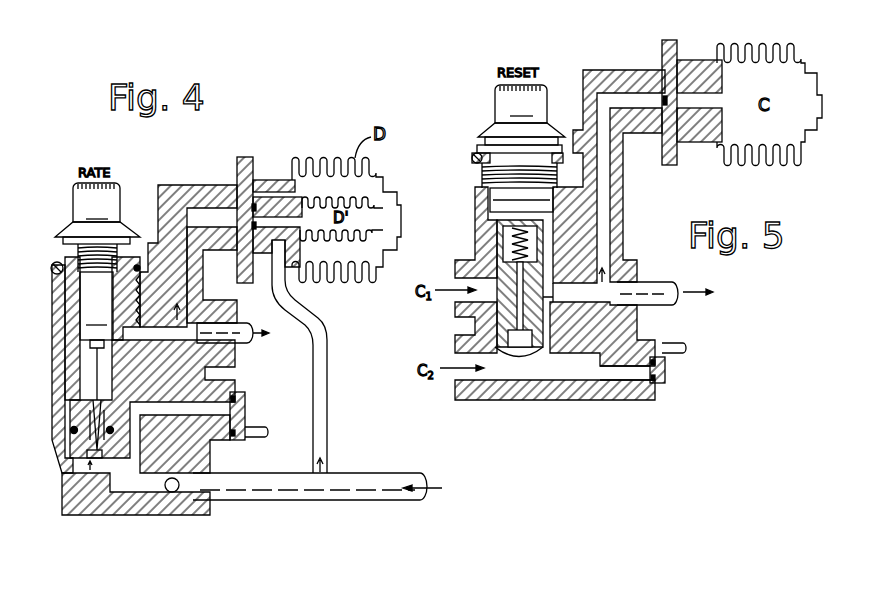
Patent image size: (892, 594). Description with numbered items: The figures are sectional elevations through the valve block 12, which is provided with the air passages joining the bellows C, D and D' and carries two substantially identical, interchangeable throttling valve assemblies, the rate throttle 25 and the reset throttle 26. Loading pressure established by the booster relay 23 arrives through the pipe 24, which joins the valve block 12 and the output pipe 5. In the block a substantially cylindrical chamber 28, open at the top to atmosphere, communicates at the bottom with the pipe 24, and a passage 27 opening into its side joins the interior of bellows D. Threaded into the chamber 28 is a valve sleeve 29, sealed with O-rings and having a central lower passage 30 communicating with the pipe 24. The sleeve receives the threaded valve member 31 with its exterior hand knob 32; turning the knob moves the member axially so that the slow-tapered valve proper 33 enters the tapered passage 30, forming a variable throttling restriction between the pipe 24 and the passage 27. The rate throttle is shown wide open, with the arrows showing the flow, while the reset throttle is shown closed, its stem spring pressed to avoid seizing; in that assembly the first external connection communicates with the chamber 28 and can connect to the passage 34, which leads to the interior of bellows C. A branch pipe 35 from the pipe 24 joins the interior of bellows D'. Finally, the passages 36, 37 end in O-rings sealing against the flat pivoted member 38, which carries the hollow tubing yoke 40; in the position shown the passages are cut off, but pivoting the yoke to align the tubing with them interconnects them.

In FIG. 4, the valve block 12 is at (180, 185).
In FIG. 5, the valve block 12 is at (608, 70).
In FIG. 4, the Rate throttle valve assembly 25 is at (96, 202).
In FIG. 5, the Reset throttle valve assembly 26 is at (518, 148).
In FIG. 4, the passage 27 is at (153, 321).
In FIG. 4, the cylindrical chamber 28 is at (130, 356).
In FIG. 4, the valve sleeve 29 is at (65, 266).
In FIG. 4, the valve passage 30 is at (73, 434).
In FIG. 4, the valve member 31 is at (96, 306).
In FIG. 4, the hand knob 32 is at (120, 234).
In FIG. 4, the valve proper 33 is at (102, 398).
In FIG. 5, the passage 34 is at (562, 293).
In FIG. 4, the branch pipe 35 is at (327, 405).
In FIG. 4, the passage 36 is at (168, 405).
In FIG. 5, the passage 37 is at (632, 372).
In FIG. 4, the pivoted member 38 is at (245, 400).
In FIG. 5, the pivoted member 38 is at (668, 378).
In FIG. 4, the hollow tubing yoke 40 is at (266, 428).
In FIG. 5, the hollow tubing yoke 40 is at (672, 344).
In FIG. 4, the pipe 24 is at (380, 500).
In FIG. 4, the output pipe 5 is at (172, 492).
In FIG. 4, the booster relay 23 is at (464, 490).